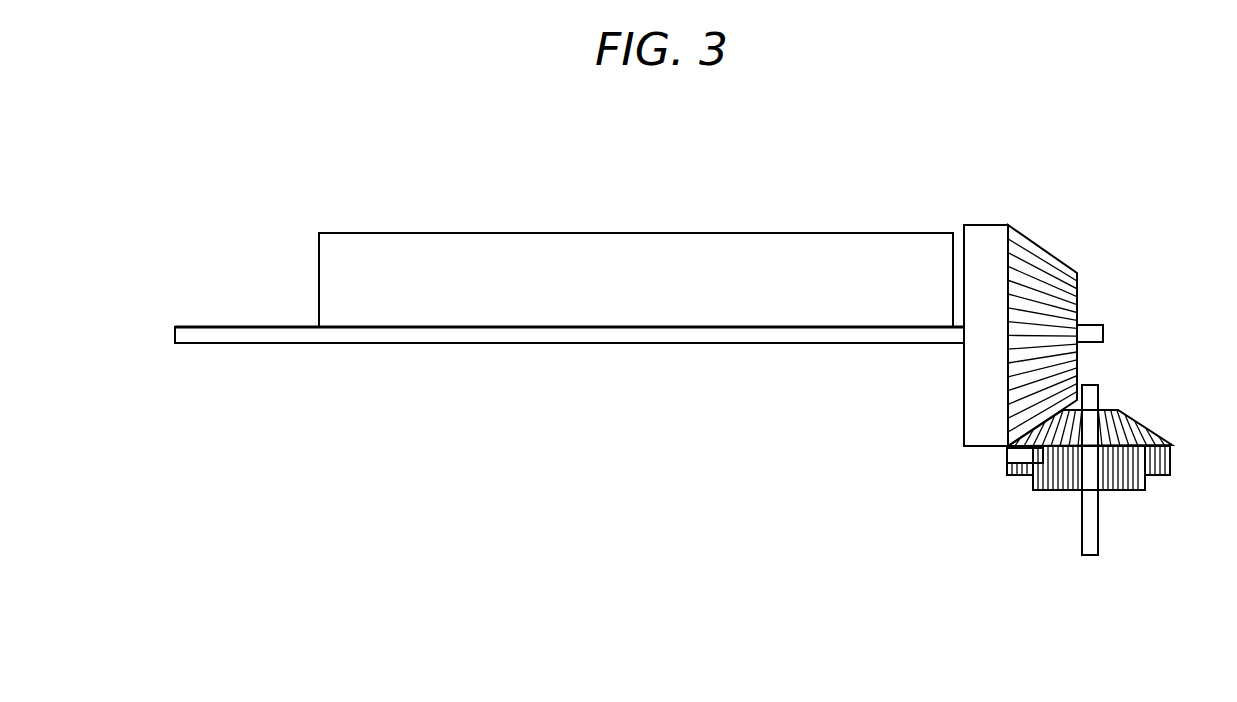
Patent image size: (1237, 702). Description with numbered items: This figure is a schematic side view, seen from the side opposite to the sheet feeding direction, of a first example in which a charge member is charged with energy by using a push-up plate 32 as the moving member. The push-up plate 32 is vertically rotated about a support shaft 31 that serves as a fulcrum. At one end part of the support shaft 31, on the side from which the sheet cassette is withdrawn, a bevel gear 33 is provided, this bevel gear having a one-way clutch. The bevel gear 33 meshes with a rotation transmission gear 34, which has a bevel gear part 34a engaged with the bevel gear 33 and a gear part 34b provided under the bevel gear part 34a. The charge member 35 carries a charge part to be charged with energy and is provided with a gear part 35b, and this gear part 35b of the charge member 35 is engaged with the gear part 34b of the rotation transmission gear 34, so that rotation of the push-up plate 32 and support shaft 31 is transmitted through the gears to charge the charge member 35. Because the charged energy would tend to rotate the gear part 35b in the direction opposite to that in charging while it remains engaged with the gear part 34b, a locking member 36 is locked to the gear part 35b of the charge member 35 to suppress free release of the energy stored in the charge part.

The support shaft 31 is at (232, 338).
The push-up plate 32 is at (447, 263).
The bevel gear 33 is at (1047, 233).
The rotation transmission gear 34 is at (1122, 376).
The bevel gear part 34a is at (1115, 412).
The gear part 34b is at (1177, 452).
The charge member 35 is at (1081, 489).
The gear part 35b is at (1110, 475).
The locking member 36 is at (1018, 453).